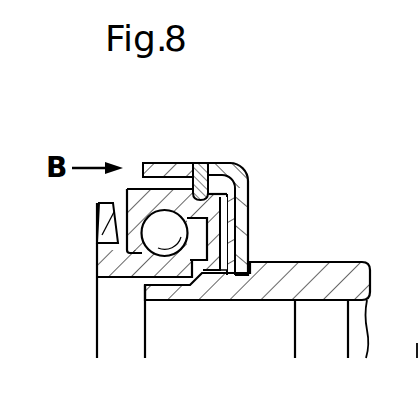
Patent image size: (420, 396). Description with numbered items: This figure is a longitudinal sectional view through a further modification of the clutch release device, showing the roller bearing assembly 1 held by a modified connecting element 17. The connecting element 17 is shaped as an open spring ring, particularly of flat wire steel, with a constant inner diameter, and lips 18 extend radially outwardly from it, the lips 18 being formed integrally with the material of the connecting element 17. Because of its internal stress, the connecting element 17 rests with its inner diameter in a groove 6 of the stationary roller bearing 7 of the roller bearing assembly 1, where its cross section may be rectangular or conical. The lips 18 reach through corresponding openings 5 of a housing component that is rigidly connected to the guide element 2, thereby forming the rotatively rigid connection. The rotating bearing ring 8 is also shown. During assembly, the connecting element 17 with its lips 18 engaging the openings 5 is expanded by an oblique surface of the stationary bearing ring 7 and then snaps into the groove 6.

The roller bearing assembly 1 is at (72, 248).
The guide element 2 is at (360, 283).
The openings 5 is at (211, 167).
The groove 6 is at (228, 197).
The stationary roller bearing 7 is at (140, 201).
The rotating bearing ring 8 is at (120, 262).
The connecting element 17 is at (282, 171).
The lips 18 is at (201, 167).